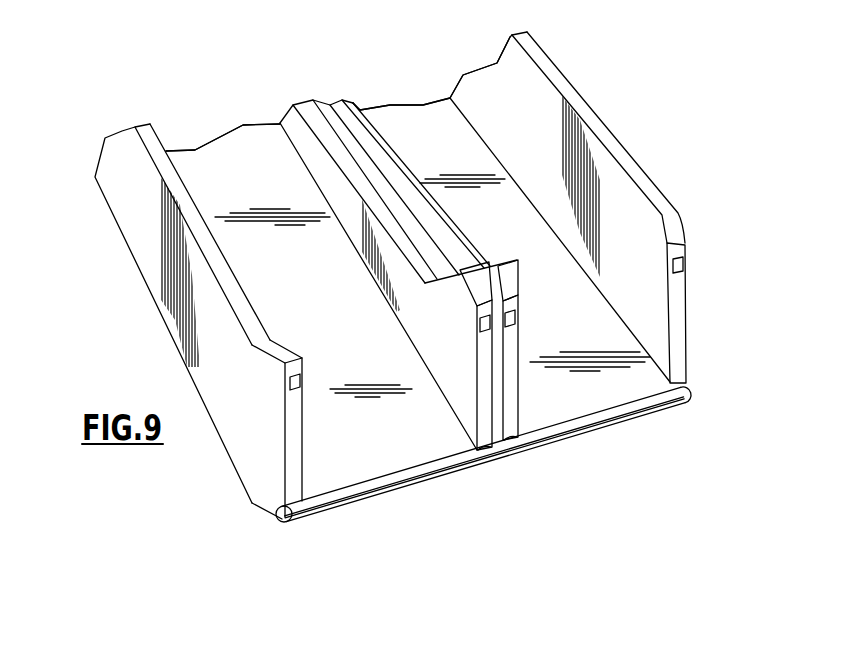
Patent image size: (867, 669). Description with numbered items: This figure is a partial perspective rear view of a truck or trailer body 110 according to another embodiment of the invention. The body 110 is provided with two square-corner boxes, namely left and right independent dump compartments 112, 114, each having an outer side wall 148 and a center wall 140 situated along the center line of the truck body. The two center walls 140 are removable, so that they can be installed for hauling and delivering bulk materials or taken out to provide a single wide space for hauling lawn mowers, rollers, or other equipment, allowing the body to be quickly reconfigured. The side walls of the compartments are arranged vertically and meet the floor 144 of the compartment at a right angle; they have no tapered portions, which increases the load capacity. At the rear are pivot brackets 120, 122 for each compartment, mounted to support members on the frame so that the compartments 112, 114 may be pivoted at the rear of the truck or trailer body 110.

The truck or trailer body 110 is at (728, 225).
The left dump compartment 112 is at (204, 117).
The right dump compartment 114 is at (431, 64).
The pivot bracket 120 is at (687, 400).
The pivot bracket 122 is at (498, 456).
The center wall 140 is at (346, 100).
The floor 144 is at (383, 457).
The outer side wall 148 is at (147, 203).